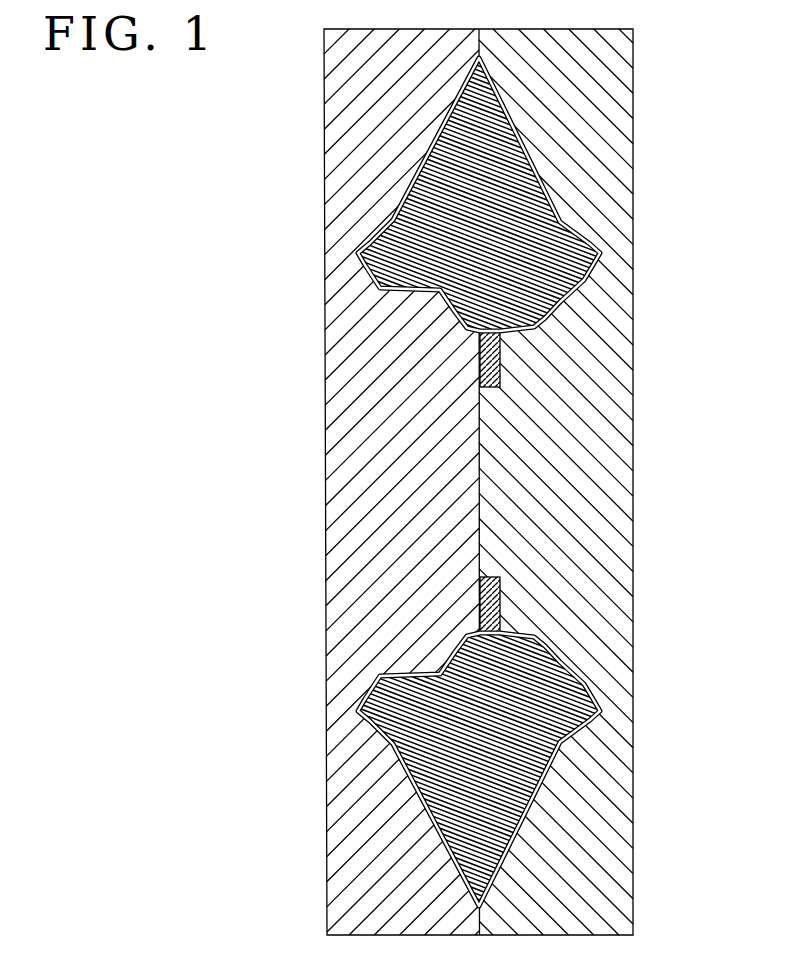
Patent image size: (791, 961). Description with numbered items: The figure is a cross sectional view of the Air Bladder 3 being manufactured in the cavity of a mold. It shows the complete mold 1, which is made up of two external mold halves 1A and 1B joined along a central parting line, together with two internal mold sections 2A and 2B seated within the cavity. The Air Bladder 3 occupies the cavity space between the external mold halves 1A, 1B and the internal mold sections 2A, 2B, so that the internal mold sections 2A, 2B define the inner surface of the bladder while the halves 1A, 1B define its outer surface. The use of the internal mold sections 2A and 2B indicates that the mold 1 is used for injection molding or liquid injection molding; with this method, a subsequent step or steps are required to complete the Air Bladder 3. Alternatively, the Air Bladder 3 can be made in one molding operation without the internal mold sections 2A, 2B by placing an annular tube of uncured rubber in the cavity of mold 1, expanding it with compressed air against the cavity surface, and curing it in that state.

The mold 1 is at (478, 482).
The external mold half 1A is at (325, 491).
The external mold half 1B is at (633, 490).
The internal mold section 2A is at (476, 217).
The internal mold section 2B is at (507, 740).
The Air Bladder 3 is at (365, 247).